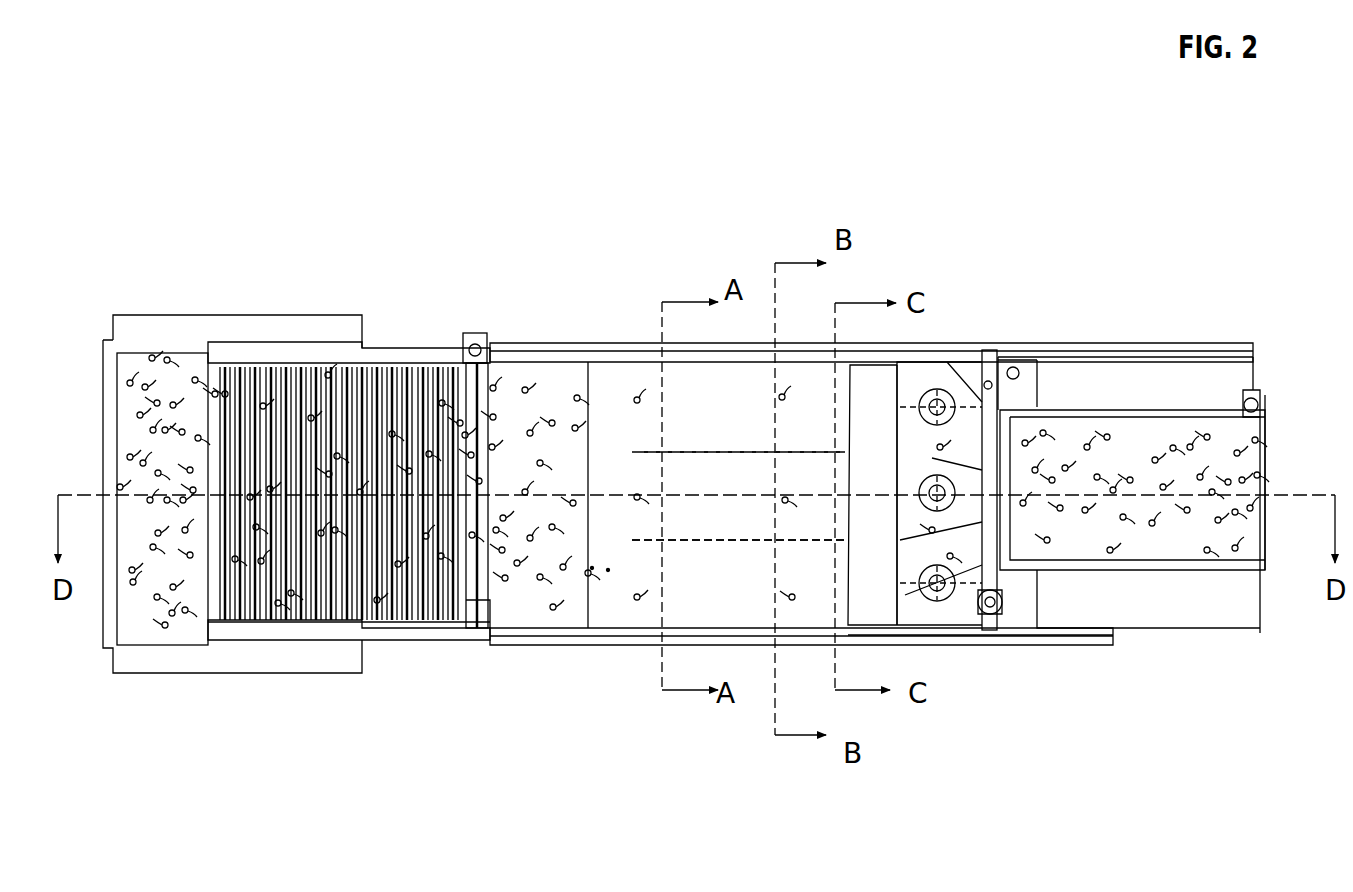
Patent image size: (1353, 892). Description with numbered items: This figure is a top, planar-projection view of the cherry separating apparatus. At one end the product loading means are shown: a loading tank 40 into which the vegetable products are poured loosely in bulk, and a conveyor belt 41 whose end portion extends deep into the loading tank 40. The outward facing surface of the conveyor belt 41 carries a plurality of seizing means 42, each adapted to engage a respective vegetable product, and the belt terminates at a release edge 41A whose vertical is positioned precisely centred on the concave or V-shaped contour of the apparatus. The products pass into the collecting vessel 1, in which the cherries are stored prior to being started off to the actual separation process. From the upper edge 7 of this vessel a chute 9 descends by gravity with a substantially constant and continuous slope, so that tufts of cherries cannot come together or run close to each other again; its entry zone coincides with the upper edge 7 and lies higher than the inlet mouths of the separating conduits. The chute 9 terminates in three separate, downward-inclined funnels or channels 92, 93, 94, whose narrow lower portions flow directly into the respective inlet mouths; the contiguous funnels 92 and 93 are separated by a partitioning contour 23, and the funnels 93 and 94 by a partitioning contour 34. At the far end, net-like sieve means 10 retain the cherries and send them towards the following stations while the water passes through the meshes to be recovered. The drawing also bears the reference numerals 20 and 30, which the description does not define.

The collecting vessel 1 is at (507, 385).
The upper edge 7 is at (588, 387).
The chute 9 is at (592, 568).
The net-like sieve means 10 is at (1142, 437).
The gate unit with discs 20 is at (940, 392).
The partitioning contour 23 is at (680, 443).
The stop plate 30 is at (1000, 354).
The partitioning contour 34 is at (811, 550).
The loading tank 40 is at (133, 352).
The conveyor belt 41 is at (383, 372).
The release edge 41A is at (500, 606).
The seizing means 42 is at (415, 625).
The funnel 92 is at (732, 393).
The funnel 93 is at (710, 500).
The funnel 94 is at (787, 602).